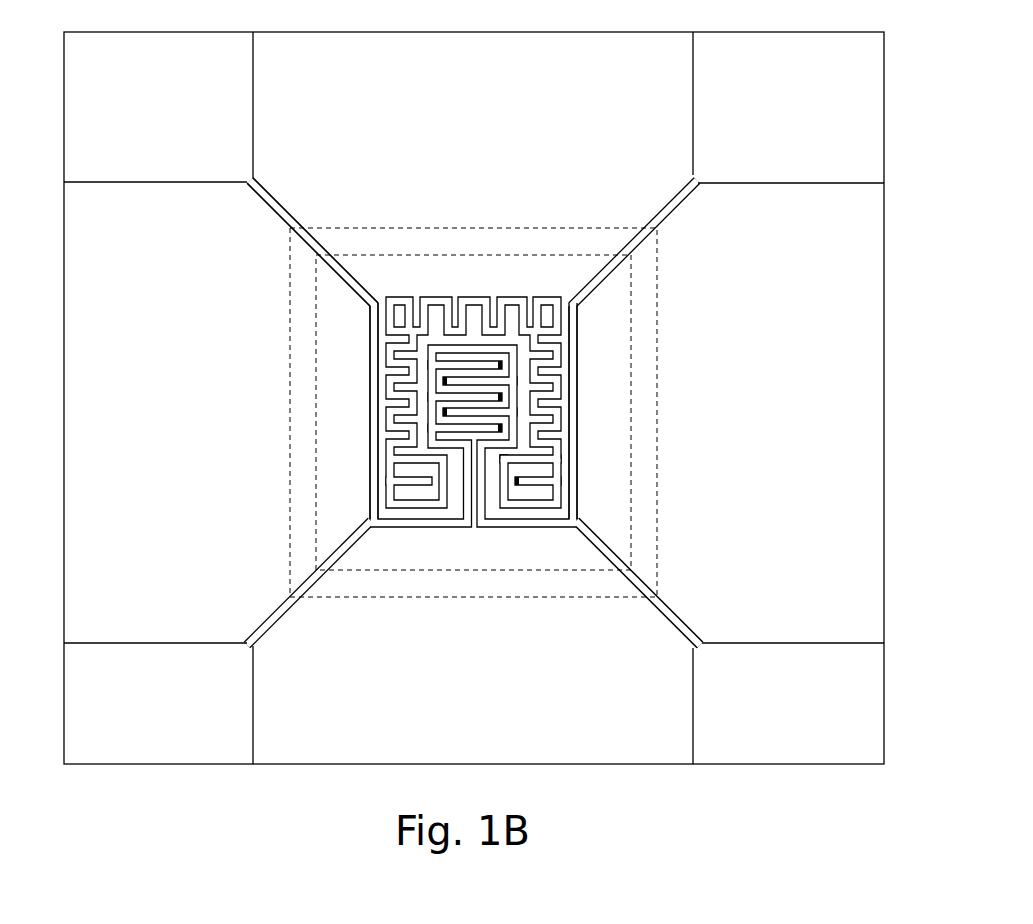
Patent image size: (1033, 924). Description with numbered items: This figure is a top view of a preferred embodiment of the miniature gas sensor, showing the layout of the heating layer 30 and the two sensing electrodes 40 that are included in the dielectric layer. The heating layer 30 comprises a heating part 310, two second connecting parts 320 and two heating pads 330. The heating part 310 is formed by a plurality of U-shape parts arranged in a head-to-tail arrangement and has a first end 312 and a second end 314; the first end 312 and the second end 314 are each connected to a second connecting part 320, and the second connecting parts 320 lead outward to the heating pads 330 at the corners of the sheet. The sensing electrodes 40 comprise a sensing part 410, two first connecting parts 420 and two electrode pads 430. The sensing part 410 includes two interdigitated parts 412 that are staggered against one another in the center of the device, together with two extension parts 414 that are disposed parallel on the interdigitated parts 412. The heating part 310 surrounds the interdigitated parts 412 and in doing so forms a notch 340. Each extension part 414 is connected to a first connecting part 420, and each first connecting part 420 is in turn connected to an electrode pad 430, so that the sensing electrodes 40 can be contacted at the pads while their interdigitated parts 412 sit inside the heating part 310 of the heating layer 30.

The heating layer 30 is at (221, 193).
The heating part 310 is at (372, 351).
The first end 312 is at (344, 492).
The second end 314 is at (586, 500).
The second connecting part 320 is at (272, 212).
The heating pad 330 is at (157, 165).
The notch 340 is at (452, 482).
The sensing electrode 40 is at (658, 564).
The sensing part 410 is at (627, 434).
The interdigitated part 412 is at (520, 393).
The extension part 414 is at (485, 487).
The first connecting part 420 is at (674, 605).
The electrode pad 430 is at (788, 640).